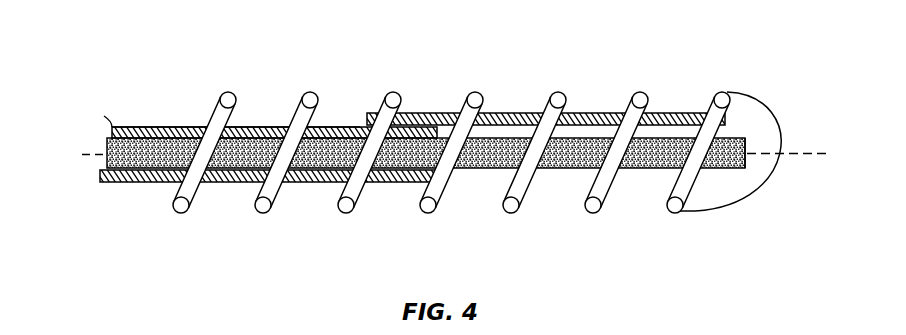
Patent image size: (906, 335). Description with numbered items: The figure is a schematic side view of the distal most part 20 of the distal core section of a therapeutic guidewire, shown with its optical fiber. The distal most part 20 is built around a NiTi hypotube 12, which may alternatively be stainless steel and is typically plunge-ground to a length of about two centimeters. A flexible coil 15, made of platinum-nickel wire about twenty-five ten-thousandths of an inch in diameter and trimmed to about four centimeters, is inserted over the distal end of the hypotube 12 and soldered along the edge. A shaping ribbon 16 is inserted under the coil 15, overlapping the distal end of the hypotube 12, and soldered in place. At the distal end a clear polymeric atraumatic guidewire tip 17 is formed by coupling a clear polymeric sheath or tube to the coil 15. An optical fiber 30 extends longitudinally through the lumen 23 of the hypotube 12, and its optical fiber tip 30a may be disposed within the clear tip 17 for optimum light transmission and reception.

The NiTi hypotube 12 is at (352, 125).
The flexible coil 15 is at (399, 93).
The shaping ribbon 16 is at (500, 127).
The clear polymeric atraumatic guidewire tip 17 is at (758, 105).
The distal most part 20 is at (620, 47).
The lumen 23 is at (130, 127).
The optical fiber 30 is at (93, 193).
The optical fiber tip 30a is at (745, 168).